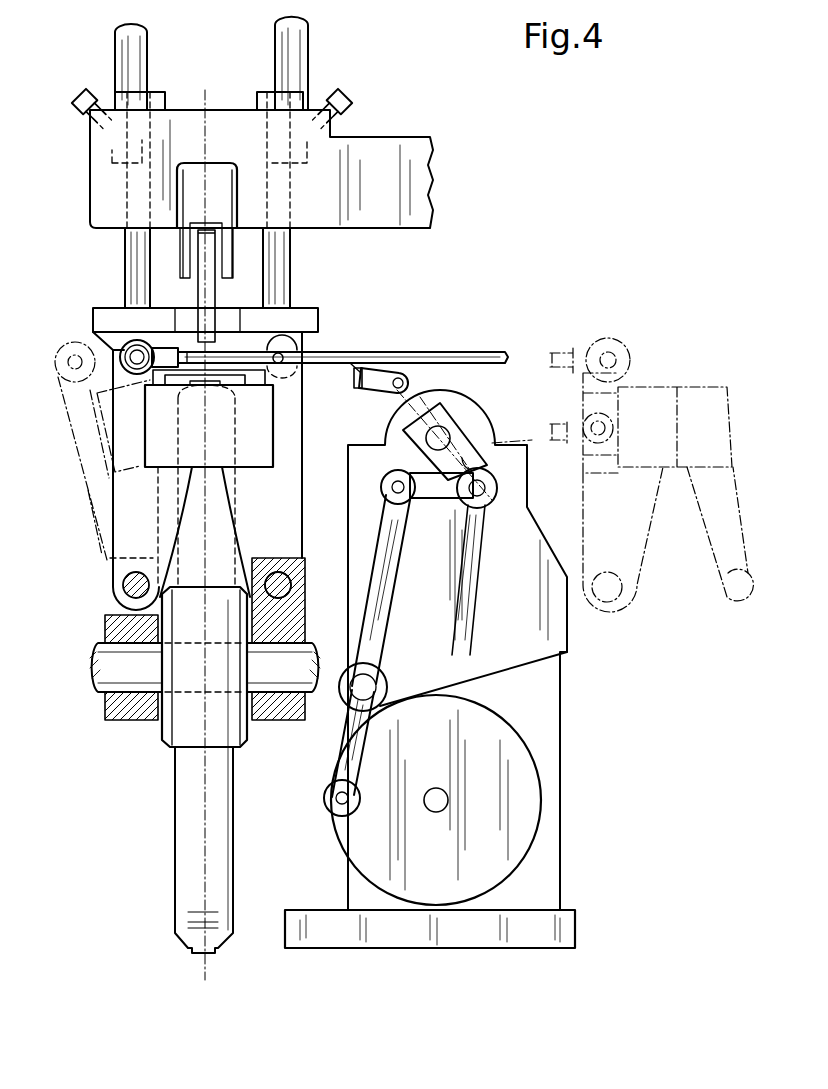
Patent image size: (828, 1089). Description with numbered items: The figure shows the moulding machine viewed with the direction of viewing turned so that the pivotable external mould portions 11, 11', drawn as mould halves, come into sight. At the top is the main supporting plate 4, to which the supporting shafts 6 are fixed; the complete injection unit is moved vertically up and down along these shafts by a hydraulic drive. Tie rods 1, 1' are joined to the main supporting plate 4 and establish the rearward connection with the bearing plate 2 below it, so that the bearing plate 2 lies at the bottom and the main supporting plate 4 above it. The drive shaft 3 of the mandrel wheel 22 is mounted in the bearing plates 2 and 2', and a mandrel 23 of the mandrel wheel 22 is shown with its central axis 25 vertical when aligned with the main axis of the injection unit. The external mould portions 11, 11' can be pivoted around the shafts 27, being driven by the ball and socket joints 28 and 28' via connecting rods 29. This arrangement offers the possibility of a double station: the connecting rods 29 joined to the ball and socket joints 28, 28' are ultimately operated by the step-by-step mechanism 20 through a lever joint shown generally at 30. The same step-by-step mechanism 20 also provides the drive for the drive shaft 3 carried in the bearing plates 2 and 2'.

The supporting shafts 6 is at (123, 42).
The main supporting plate 4 is at (122, 180).
The tie rod 1' is at (99, 268).
The tie rod 1 is at (302, 268).
The ball and socket joint 28' is at (120, 338).
The ball and socket joint 28 is at (313, 346).
The connecting rods 29 is at (447, 357).
The external mould portion 11' is at (92, 451).
The external mould portion 11 is at (247, 418).
The central axis of the mandrel 25 is at (207, 490).
The mandrel 23 is at (157, 853).
The shafts 27 is at (120, 587).
The drive shaft 3 is at (120, 670).
The bearing plate 2 is at (117, 687).
The bearing plate 2' is at (278, 671).
The mandrel wheel 22 is at (165, 745).
The step-by-step mechanism 20 is at (513, 750).
The lever joint 30 is at (477, 517).